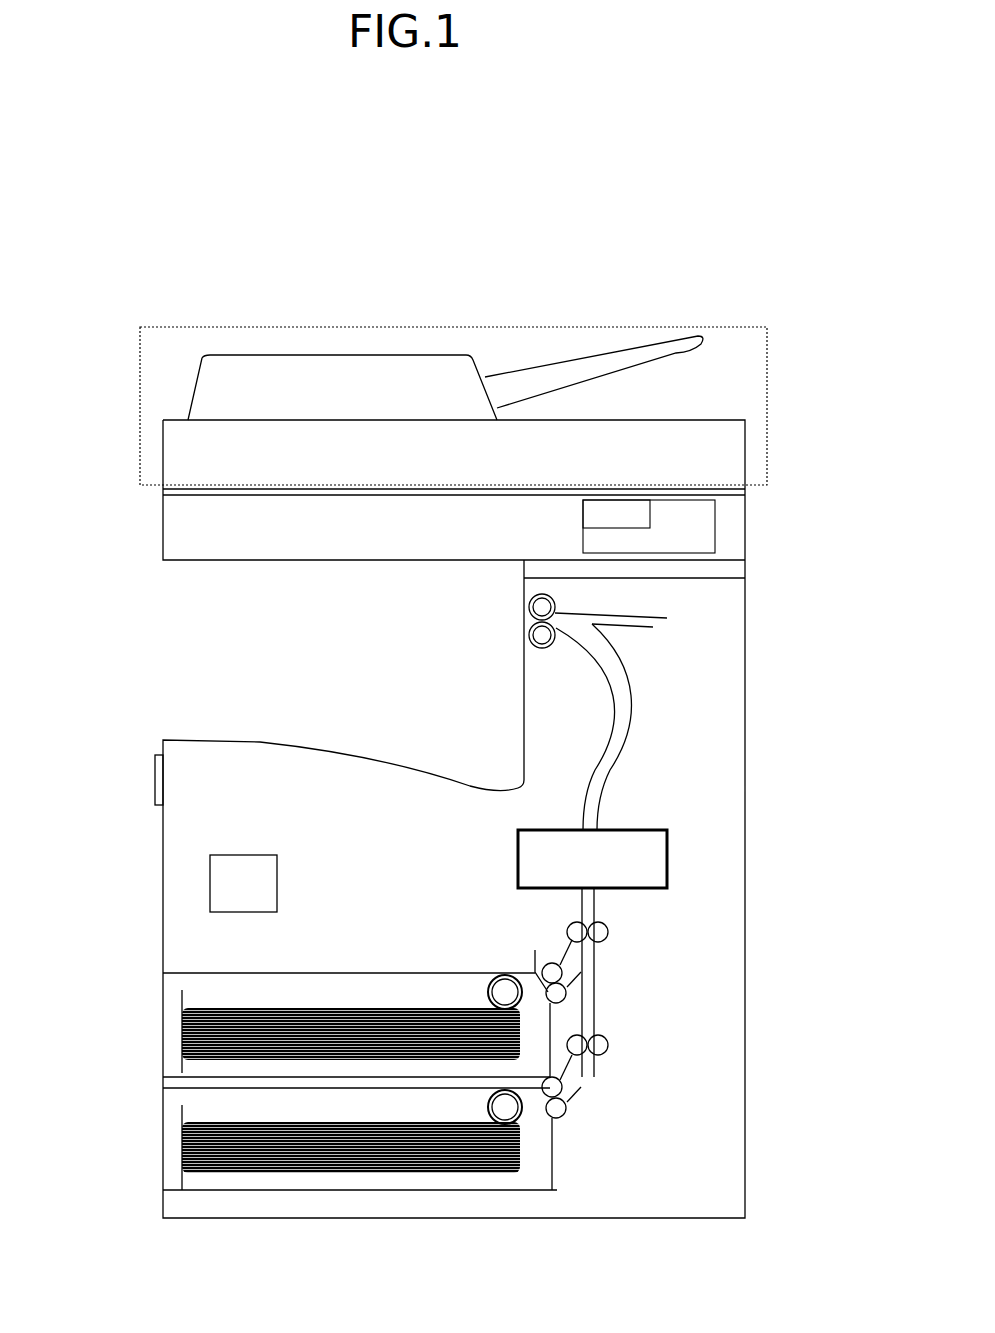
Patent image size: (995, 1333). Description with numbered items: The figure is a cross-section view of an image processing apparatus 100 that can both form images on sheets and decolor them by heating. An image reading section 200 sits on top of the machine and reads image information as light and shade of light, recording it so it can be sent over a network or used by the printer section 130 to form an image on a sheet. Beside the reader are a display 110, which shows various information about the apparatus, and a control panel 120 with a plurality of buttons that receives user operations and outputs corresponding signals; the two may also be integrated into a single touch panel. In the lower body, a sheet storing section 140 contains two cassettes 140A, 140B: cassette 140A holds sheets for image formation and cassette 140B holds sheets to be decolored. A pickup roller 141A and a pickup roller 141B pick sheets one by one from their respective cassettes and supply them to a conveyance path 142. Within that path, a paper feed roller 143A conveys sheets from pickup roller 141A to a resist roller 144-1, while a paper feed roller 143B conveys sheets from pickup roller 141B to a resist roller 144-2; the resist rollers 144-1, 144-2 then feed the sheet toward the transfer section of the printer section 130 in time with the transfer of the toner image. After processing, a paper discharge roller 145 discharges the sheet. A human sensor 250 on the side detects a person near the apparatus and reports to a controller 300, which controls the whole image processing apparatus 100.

The image processing apparatus 100 is at (633, 245).
The image reading section 200 is at (206, 327).
The human sensor 250 is at (155, 783).
The controller 300 is at (243, 855).
The display 110 is at (583, 511).
The control panel 120 is at (583, 543).
The printer section 130 is at (518, 852).
The sheet storing section 140 is at (293, 1081).
The cassette 140A is at (318, 1025).
The cassette 140B is at (322, 1139).
The pickup roller 141A is at (488, 992).
The pickup roller 141B is at (488, 1107).
The conveyance path 142 is at (625, 668).
The paper feed roller 143A is at (541, 962).
The paper feed roller 143B is at (566, 1112).
The resist roller 144-1 is at (607, 922).
The resist roller 144-2 is at (607, 1036).
The paper discharge roller 145 is at (556, 620).